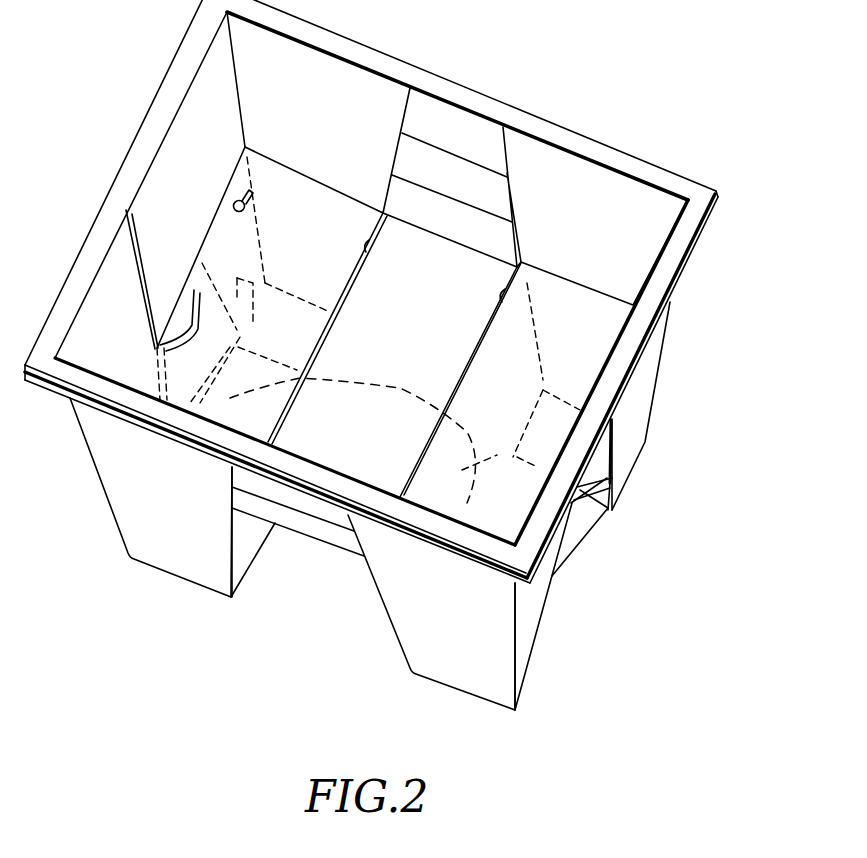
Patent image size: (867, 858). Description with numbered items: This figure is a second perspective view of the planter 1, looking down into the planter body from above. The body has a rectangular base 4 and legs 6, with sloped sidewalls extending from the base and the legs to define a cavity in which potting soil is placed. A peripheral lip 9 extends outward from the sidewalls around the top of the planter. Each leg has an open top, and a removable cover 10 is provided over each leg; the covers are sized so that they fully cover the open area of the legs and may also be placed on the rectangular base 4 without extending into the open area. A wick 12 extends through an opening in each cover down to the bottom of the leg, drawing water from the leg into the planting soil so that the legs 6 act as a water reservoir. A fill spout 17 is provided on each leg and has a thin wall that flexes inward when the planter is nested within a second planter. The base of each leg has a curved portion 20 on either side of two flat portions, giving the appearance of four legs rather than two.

The planter 1 is at (116, 95).
The base 4 is at (419, 324).
The legs 6 is at (135, 515).
The peripheral lip 9 is at (707, 235).
The removable cover 10 is at (307, 200).
The wick 12 is at (236, 197).
The fill spout 17 is at (153, 320).
The curved portion 20 is at (353, 434).